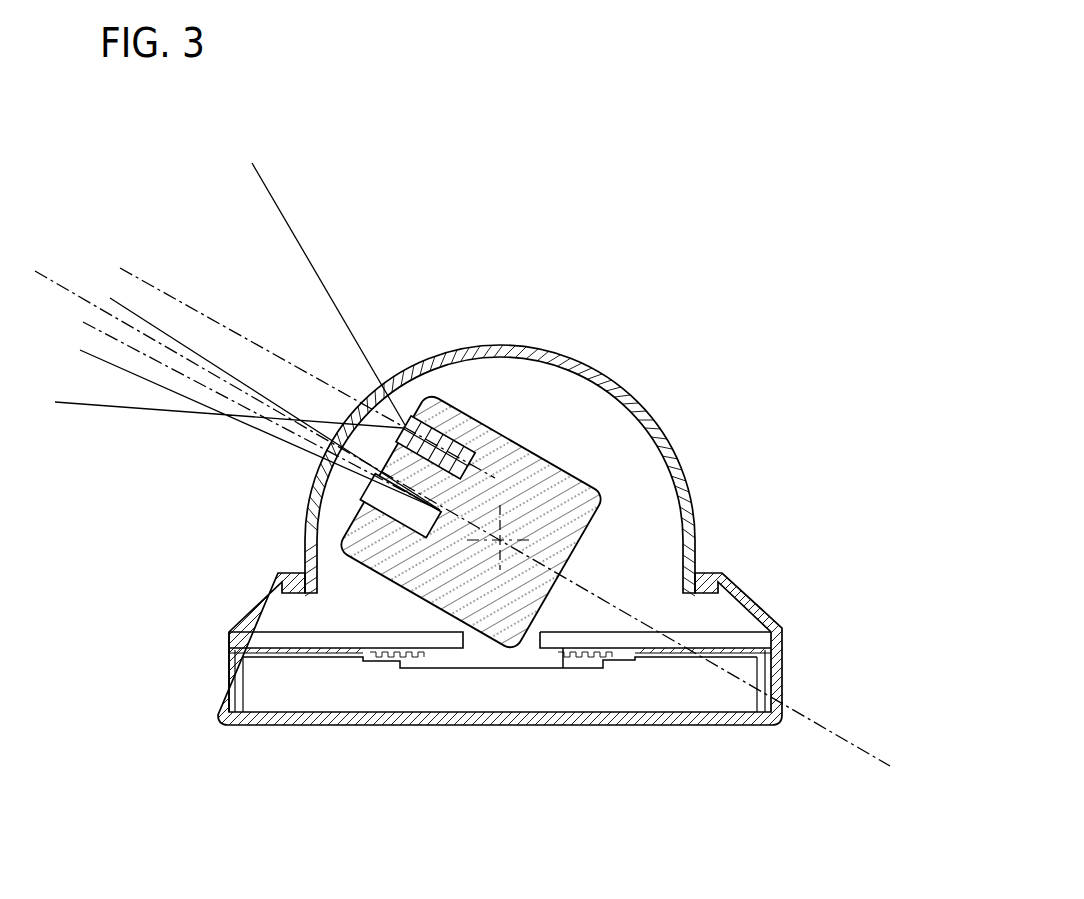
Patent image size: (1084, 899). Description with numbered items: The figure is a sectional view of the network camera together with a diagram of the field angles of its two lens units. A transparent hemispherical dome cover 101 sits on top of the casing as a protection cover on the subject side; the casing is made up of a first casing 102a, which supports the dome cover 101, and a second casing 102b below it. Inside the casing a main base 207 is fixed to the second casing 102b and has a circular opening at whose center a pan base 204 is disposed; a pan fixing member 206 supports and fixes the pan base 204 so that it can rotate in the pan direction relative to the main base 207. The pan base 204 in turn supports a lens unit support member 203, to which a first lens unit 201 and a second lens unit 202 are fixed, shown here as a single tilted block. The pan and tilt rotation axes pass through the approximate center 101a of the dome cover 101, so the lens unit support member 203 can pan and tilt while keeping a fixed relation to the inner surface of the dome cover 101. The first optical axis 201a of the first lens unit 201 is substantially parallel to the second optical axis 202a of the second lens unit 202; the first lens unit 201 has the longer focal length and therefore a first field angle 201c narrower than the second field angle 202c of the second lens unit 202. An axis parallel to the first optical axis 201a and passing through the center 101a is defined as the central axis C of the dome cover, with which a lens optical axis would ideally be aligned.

The central axis of the dome cover C is at (65, 285).
The dome cover 101 is at (693, 500).
The approximate center of the dome cover 101a is at (500, 537).
The first casing 102a is at (746, 594).
The second casing 102b is at (781, 692).
The first lens unit 201 is at (345, 508).
The first optical axis 201a is at (300, 449).
The first field angle 201c is at (124, 363).
The second lens unit 202 is at (427, 390).
The second optical axis 202a is at (248, 335).
The second field angle 202c is at (241, 252).
The lens unit support member 203 is at (520, 470).
The pan base 204 is at (462, 640).
The pan fixing member 206 is at (390, 660).
The main base 207 is at (230, 682).